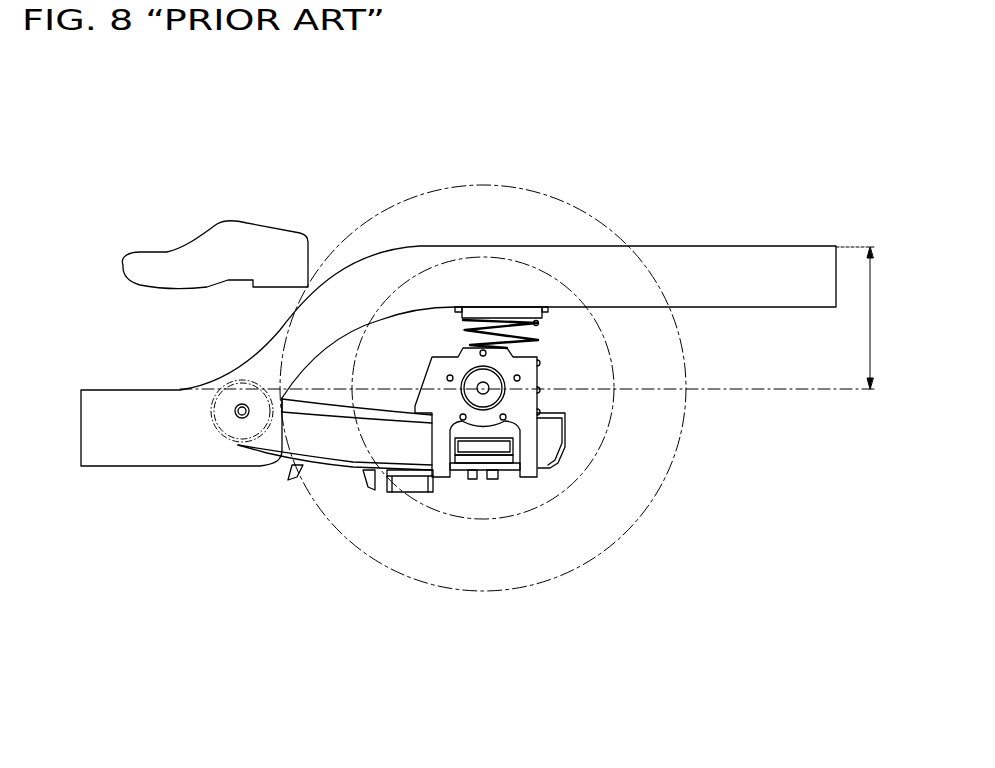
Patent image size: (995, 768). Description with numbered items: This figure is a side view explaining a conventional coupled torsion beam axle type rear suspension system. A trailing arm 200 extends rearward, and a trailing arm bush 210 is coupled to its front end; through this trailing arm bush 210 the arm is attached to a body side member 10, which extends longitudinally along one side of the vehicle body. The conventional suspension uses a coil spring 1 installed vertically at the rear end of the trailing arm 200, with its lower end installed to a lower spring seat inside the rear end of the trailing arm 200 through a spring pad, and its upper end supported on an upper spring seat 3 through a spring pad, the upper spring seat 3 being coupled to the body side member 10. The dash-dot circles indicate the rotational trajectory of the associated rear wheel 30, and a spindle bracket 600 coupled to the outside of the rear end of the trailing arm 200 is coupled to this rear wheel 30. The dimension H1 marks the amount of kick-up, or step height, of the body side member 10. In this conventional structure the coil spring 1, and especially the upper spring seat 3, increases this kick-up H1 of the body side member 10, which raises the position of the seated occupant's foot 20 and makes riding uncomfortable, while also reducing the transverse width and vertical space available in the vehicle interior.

The body side member 10 is at (747, 272).
The seated occupant's foot 20 is at (227, 232).
The rear wheel 30 is at (500, 202).
The coil spring 1 is at (545, 345).
The upper spring seat 3 is at (482, 313).
The trailing arm 200 is at (403, 440).
The trailing arm bush 210 is at (233, 414).
The spindle bracket 600 is at (517, 408).
The kick-up (step height) H1 is at (868, 318).